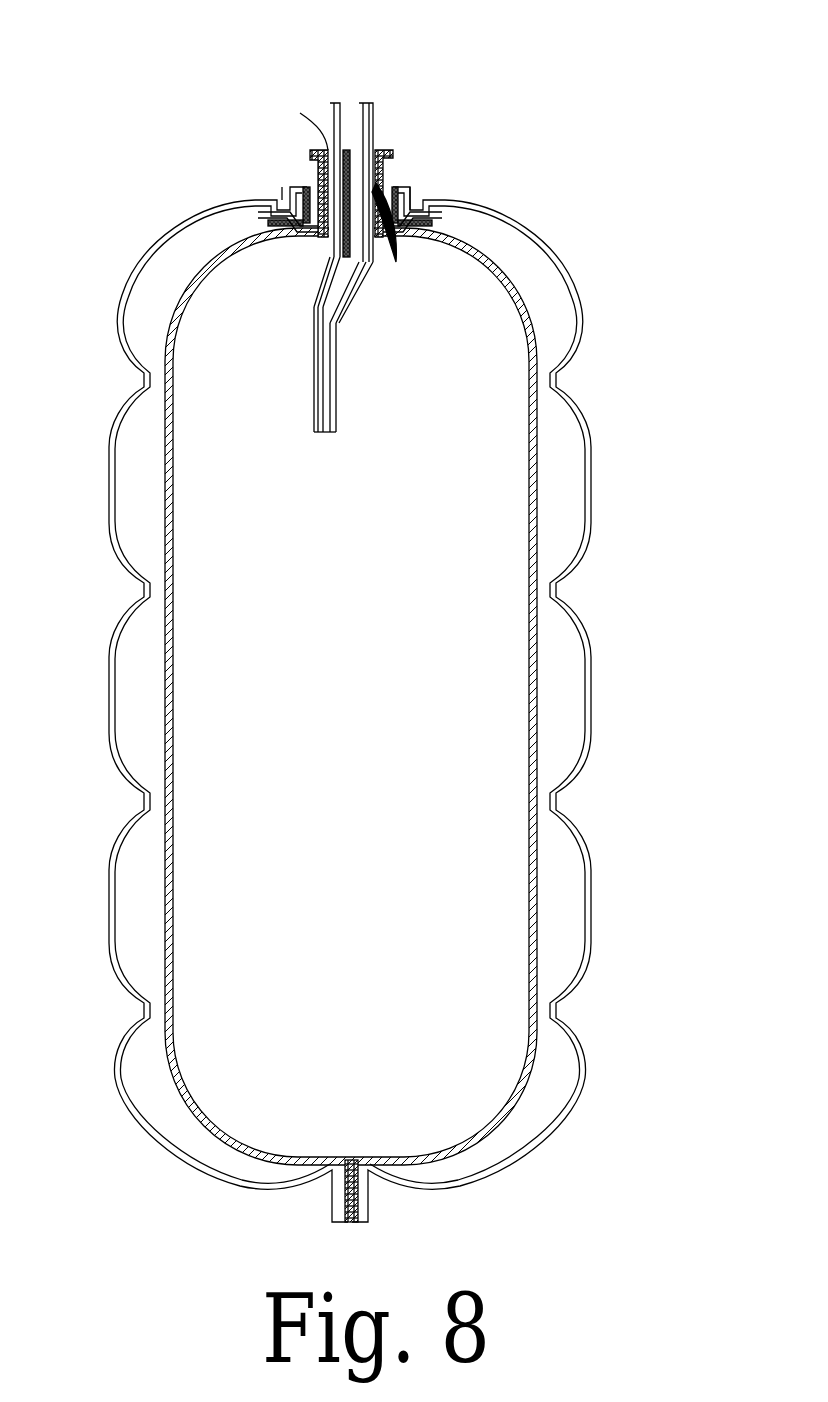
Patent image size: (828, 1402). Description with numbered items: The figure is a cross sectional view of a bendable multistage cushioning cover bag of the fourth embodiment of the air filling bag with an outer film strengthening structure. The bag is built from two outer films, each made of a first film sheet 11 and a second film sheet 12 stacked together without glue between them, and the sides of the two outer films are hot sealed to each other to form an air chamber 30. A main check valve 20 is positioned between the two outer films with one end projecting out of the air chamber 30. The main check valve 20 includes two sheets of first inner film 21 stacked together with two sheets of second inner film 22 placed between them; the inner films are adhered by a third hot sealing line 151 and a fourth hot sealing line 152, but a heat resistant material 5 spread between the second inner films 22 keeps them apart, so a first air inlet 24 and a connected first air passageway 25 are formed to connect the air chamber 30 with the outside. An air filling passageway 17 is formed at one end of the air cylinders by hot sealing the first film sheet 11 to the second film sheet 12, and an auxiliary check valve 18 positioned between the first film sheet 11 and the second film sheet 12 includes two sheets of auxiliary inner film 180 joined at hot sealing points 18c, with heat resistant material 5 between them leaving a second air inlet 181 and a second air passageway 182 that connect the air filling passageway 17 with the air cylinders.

The first film sheet 11 is at (590, 487).
The second film sheet 12 is at (531, 686).
The air chamber 30 is at (557, 738).
The main check valve 20 is at (325, 255).
The first air inlet 24 is at (350, 127).
The first air passageway 25 is at (339, 286).
The first inner film 21 is at (315, 368).
The second inner film 22 is at (325, 434).
The heat resistant material 5 is at (305, 175).
The air filling passageway 17 is at (307, 165).
The hot sealing point 18c is at (416, 194).
The auxiliary inner film 180 is at (407, 185).
The second air inlet 181 is at (292, 189).
The second air passageway 182 is at (261, 211).
The fourth hot sealing line 152 is at (330, 150).
The third hot sealing line 151 is at (394, 263).
The auxiliary check valve 18 is at (468, 224).